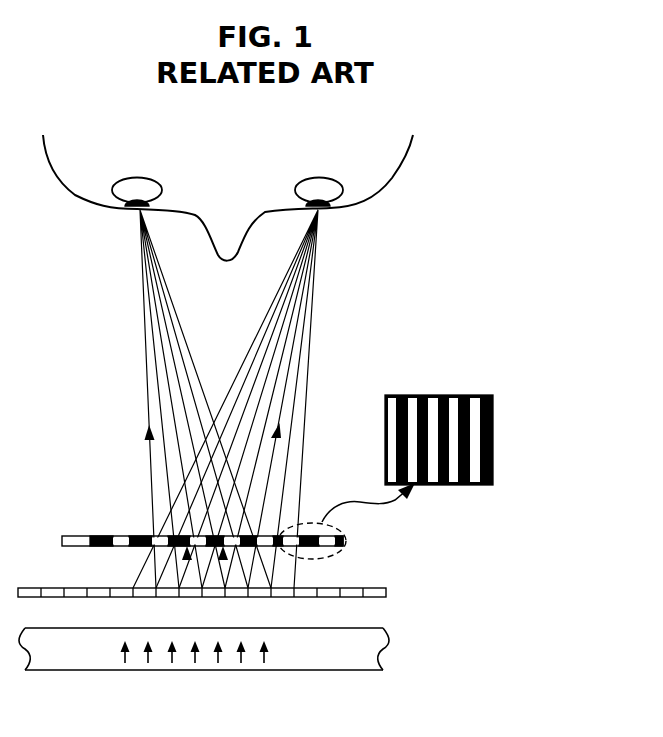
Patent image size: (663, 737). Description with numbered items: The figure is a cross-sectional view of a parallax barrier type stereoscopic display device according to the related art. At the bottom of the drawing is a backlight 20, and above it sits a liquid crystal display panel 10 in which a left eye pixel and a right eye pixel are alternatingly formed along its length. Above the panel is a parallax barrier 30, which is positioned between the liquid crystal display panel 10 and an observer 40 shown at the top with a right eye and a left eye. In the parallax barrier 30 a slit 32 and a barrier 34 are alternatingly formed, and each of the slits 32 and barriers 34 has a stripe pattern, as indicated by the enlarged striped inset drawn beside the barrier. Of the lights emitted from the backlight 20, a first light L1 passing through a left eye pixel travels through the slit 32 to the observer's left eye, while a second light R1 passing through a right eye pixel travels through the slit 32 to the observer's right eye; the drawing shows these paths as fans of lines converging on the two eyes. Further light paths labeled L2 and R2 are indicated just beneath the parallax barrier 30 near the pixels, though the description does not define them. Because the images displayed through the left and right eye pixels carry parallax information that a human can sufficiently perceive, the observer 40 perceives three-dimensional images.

The observer 40 is at (446, 157).
The parallax barrier 30 is at (286, 484).
The slit 32 is at (122, 536).
The barrier 34 is at (93, 536).
The liquid crystal display panel 10 is at (386, 593).
The backlight 20 is at (387, 648).
The second light R1 is at (153, 452).
The first light L1 is at (267, 463).
The light from left eye pixel L2 is at (186, 562).
The light from right eye pixel R2 is at (223, 562).